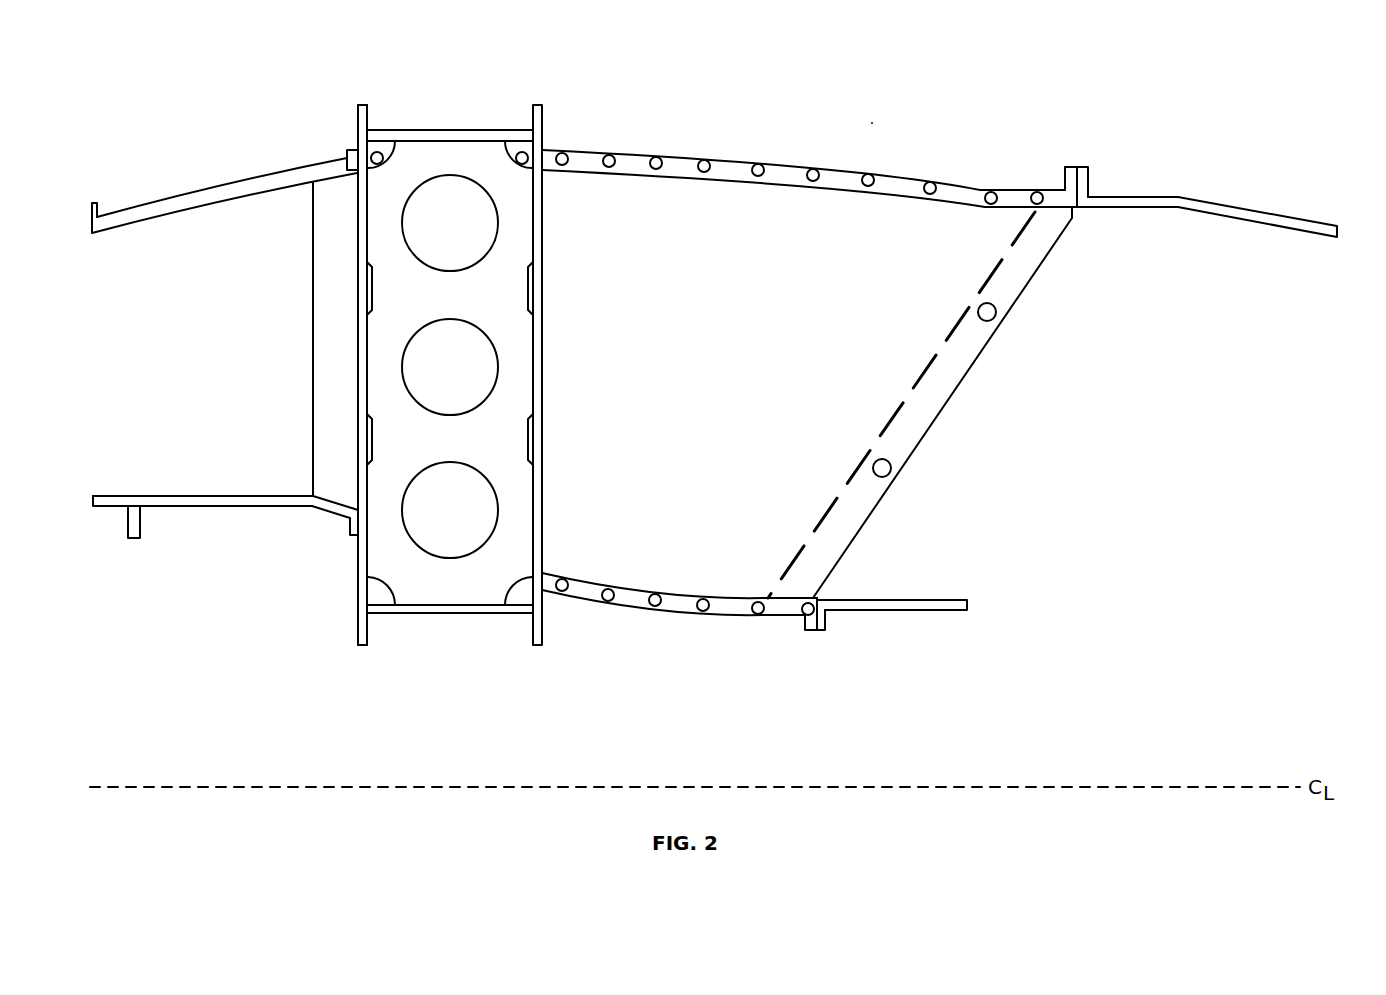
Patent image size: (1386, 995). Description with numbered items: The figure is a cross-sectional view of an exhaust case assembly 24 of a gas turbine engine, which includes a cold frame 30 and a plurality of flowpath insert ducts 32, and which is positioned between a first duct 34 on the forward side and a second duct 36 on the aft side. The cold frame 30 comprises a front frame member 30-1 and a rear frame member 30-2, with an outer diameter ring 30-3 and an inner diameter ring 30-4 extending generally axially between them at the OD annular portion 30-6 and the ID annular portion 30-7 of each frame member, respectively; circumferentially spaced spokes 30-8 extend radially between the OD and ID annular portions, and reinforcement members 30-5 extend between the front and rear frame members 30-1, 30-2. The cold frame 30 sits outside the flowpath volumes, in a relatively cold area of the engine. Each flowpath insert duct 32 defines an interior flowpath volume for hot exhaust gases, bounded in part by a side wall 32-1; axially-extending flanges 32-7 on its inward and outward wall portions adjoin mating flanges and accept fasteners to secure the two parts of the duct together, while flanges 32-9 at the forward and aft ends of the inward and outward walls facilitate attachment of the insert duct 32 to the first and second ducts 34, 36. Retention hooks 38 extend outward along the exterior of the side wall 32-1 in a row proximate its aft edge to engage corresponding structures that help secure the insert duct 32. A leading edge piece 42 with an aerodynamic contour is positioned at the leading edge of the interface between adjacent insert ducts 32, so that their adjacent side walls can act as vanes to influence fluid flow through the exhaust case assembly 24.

The exhaust case assembly 24 is at (872, 123).
The cold frame 30 is at (544, 115).
The front frame member 30-1 is at (357, 590).
The rear frame member 30-2 is at (544, 624).
The outer diameter ring 30-3 is at (380, 128).
The inner diameter ring 30-4 is at (392, 616).
The reinforcement member 30-5 is at (466, 592).
The OD annular portion 30-6 is at (354, 115).
The ID annular portion 30-7 is at (356, 634).
The spoke 30-8 is at (356, 556).
The flowpath insert duct 32 is at (948, 184).
The side wall 32-1 is at (702, 380).
The axially-extending flange 32-7 is at (731, 156).
The flange 32-9 is at (350, 150).
The first duct 34 is at (223, 200).
The second duct 36 is at (1125, 208).
The retention hook 38 is at (957, 333).
The leading edge piece 42 is at (320, 344).